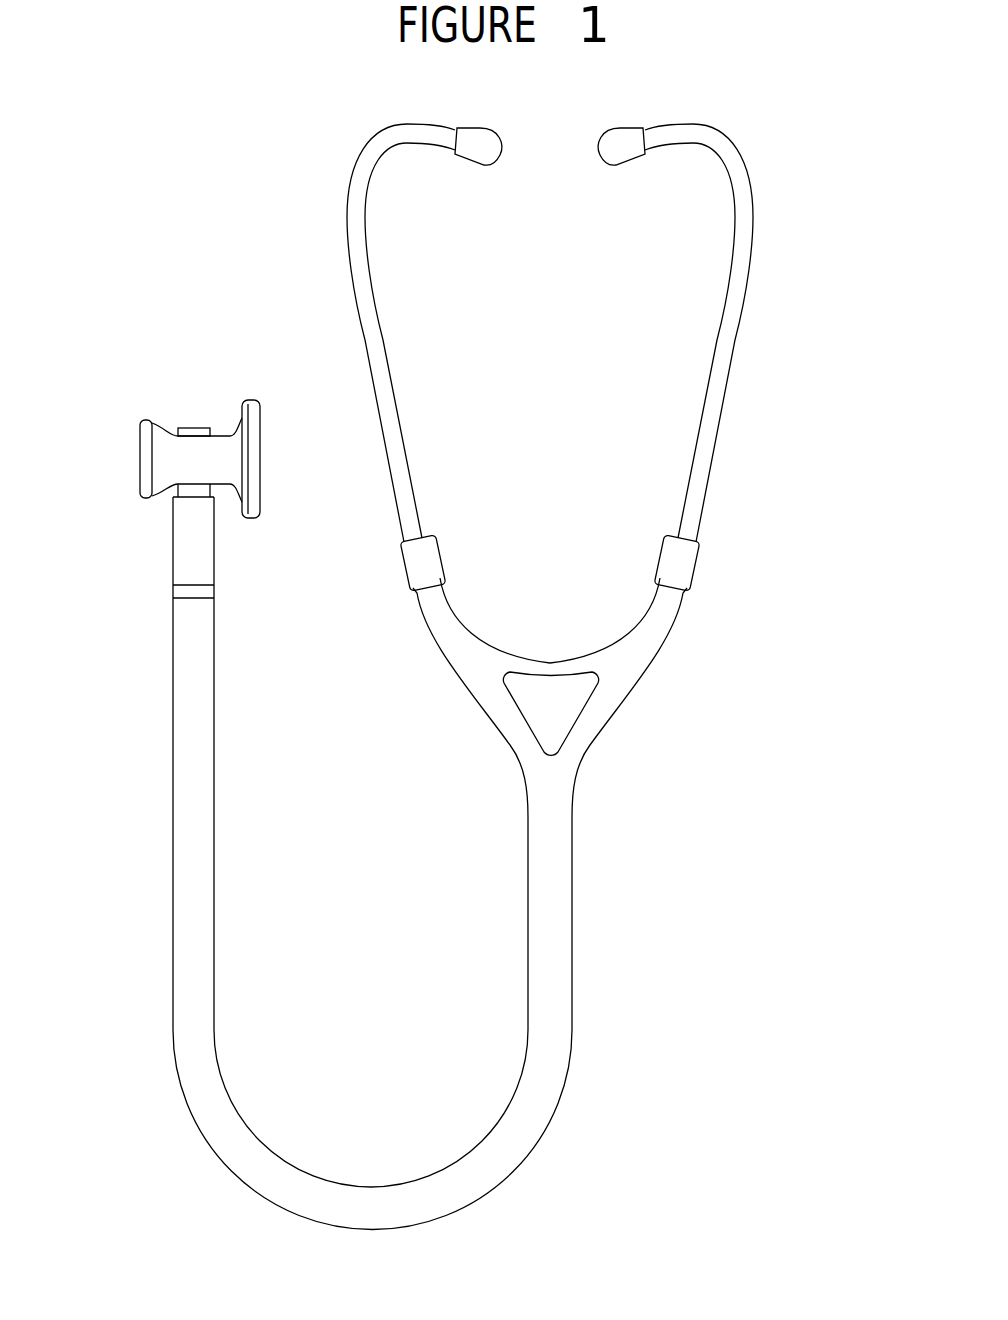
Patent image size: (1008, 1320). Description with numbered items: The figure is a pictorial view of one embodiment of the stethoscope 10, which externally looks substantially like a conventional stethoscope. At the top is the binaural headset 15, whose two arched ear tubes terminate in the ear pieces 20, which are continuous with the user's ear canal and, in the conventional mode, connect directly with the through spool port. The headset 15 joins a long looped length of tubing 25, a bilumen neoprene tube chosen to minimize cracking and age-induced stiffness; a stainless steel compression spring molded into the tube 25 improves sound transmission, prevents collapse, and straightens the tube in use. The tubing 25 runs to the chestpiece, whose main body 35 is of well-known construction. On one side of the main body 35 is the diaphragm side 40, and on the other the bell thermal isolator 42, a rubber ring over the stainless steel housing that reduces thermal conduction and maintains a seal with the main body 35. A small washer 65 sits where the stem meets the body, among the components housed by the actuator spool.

The stethoscope 10 is at (825, 128).
The binaural headset / ear tubes 15 is at (396, 397).
The ear pieces 20 is at (495, 168).
The tubing 25 is at (216, 813).
The main body 35 is at (128, 602).
The diaphragm side of chestpiece 40 is at (252, 397).
The bell thermal isolator 42 is at (148, 499).
The washer 65 is at (193, 427).